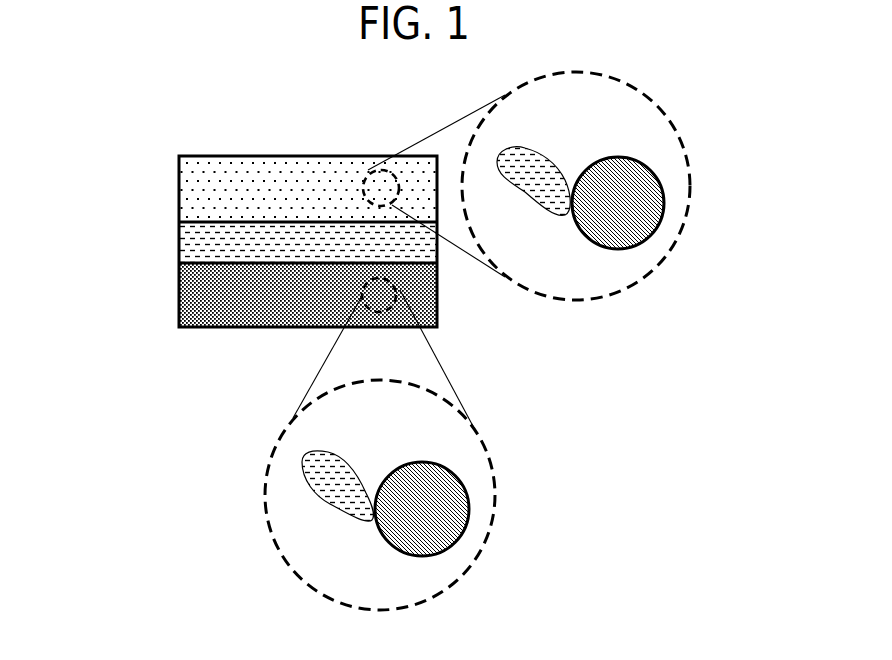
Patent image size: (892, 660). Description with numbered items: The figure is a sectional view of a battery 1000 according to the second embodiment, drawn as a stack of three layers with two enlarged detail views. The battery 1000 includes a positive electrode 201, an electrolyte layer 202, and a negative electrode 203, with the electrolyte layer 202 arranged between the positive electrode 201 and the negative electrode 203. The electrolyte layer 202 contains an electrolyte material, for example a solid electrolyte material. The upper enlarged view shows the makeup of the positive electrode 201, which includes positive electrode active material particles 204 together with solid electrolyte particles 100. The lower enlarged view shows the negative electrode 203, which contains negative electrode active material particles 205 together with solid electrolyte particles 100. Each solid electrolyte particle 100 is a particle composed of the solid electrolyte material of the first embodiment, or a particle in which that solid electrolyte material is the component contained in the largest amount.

The battery 1000 is at (263, 205).
The positive electrode 201 is at (213, 175).
The electrolyte layer 202 is at (213, 240).
The negative electrode 203 is at (213, 292).
The solid electrolyte particle 100 is at (549, 197).
The positive electrode active material particle 204 is at (632, 203).
The negative electrode active material particle 205 is at (438, 507).